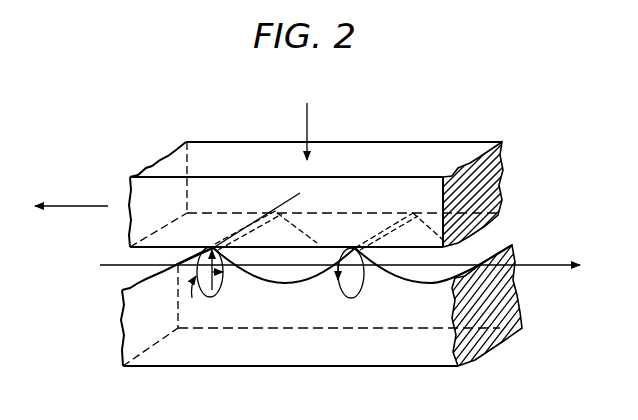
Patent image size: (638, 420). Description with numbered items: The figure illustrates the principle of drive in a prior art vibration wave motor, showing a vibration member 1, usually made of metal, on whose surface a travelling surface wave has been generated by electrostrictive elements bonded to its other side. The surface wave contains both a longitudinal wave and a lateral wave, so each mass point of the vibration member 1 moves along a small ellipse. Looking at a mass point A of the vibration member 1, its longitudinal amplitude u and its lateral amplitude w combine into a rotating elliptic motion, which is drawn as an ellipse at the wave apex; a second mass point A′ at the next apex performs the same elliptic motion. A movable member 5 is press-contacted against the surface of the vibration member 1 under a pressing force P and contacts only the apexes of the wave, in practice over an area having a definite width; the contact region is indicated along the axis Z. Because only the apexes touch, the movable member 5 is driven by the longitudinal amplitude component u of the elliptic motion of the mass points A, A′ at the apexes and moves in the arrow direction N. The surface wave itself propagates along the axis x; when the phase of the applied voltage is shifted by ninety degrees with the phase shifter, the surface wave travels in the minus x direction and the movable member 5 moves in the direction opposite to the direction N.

The movable member 5 is at (402, 150).
The vibration member 1 is at (373, 357).
The groove direction axis Z is at (259, 217).
The x direction x is at (347, 266).
The arrow direction N is at (71, 194).
The pressing force P is at (296, 131).
The mass point A is at (213, 247).
The mass point A′ is at (355, 247).
The longitudinal amplitude u is at (214, 290).
The lateral amplitude w is at (189, 295).